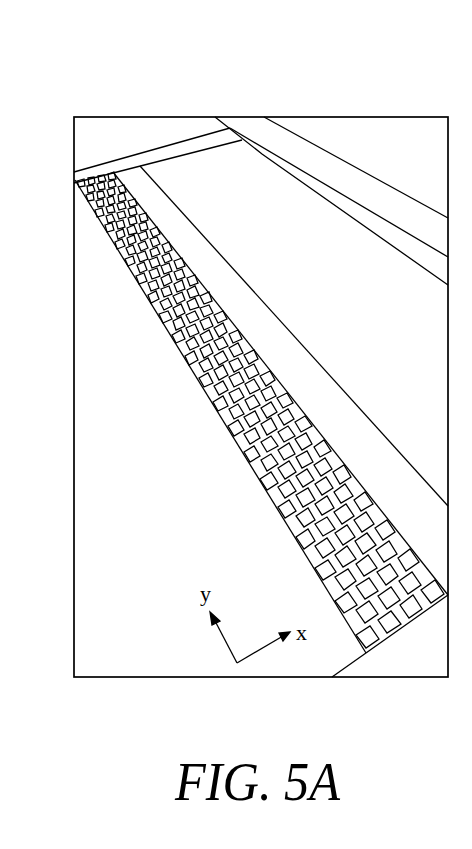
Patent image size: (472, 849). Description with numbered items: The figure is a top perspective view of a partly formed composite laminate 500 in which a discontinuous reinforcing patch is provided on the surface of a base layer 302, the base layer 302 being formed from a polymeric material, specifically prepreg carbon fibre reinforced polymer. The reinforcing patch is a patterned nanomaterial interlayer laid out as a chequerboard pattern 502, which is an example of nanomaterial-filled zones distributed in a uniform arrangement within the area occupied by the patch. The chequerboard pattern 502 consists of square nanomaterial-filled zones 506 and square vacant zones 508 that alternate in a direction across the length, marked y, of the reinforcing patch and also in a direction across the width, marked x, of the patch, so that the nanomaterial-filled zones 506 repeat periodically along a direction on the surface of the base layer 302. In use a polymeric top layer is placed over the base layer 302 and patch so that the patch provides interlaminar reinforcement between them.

The laminate 500 is at (117, 81).
The chequerboard pattern 502 is at (150, 235).
The base layer 302 is at (122, 392).
The square nanomaterial-filled zones 506 is at (227, 427).
The square vacant zones 508 is at (292, 533).